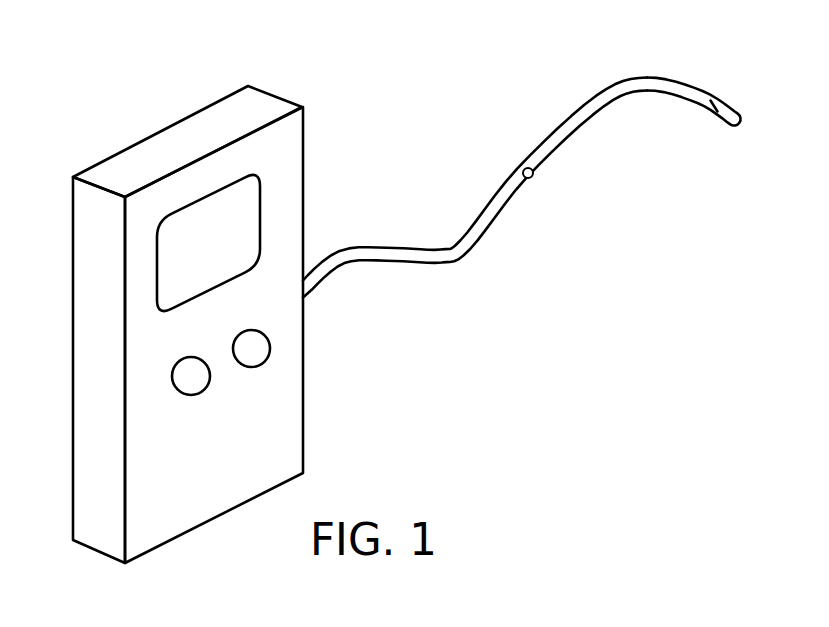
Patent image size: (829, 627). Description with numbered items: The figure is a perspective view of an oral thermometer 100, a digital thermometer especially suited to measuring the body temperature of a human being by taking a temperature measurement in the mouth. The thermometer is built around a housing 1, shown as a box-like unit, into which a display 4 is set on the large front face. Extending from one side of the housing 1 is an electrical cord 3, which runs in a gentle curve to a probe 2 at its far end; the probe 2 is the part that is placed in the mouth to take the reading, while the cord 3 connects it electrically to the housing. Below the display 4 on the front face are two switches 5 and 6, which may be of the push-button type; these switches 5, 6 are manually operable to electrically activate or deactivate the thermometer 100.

The oral thermometer 100 is at (384, 109).
The housing 1 is at (86, 372).
The probe 2 is at (618, 97).
The electrical cord 3 is at (450, 262).
The display 4 is at (208, 233).
The switch 5 is at (195, 395).
The switch 6 is at (255, 367).